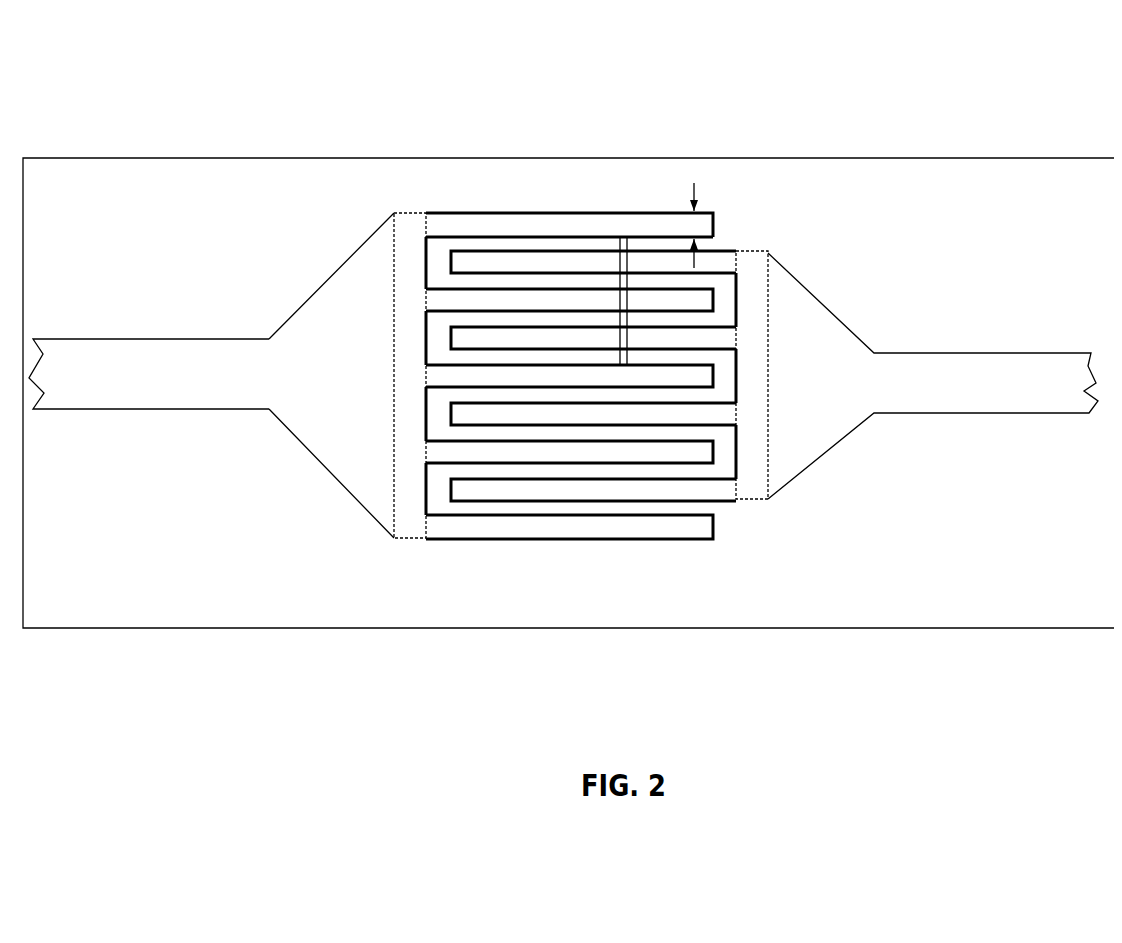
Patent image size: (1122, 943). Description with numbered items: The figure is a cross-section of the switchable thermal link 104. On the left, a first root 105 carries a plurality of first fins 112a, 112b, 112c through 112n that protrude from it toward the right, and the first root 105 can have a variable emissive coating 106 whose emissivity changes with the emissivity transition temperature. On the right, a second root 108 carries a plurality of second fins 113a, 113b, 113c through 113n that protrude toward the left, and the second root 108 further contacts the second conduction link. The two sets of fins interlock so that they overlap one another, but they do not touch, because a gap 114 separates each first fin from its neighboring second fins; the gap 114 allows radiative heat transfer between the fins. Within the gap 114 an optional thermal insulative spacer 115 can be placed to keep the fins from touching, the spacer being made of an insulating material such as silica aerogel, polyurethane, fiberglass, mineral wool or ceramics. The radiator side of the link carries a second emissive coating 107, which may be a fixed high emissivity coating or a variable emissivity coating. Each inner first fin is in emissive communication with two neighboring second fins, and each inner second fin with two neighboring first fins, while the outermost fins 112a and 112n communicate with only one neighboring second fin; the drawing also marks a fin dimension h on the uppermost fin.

The switchable thermal link 104 is at (181, 88).
The first root 105 is at (315, 352).
The variable emissive coating 106 is at (437, 243).
The second emissive coating 107 is at (614, 412).
The second root 108 is at (810, 354).
The first fin 112a is at (438, 521).
The first fin 112b is at (488, 455).
The first fin 112c is at (560, 300).
The first fin 112n is at (585, 220).
The second fin 113a is at (692, 486).
The second fin 113b is at (702, 416).
The second fin 113c is at (700, 332).
The second fin 113n is at (721, 257).
The gap 114 is at (468, 236).
The thermal insulative spacer 115 is at (622, 264).
The finger height h is at (701, 194).